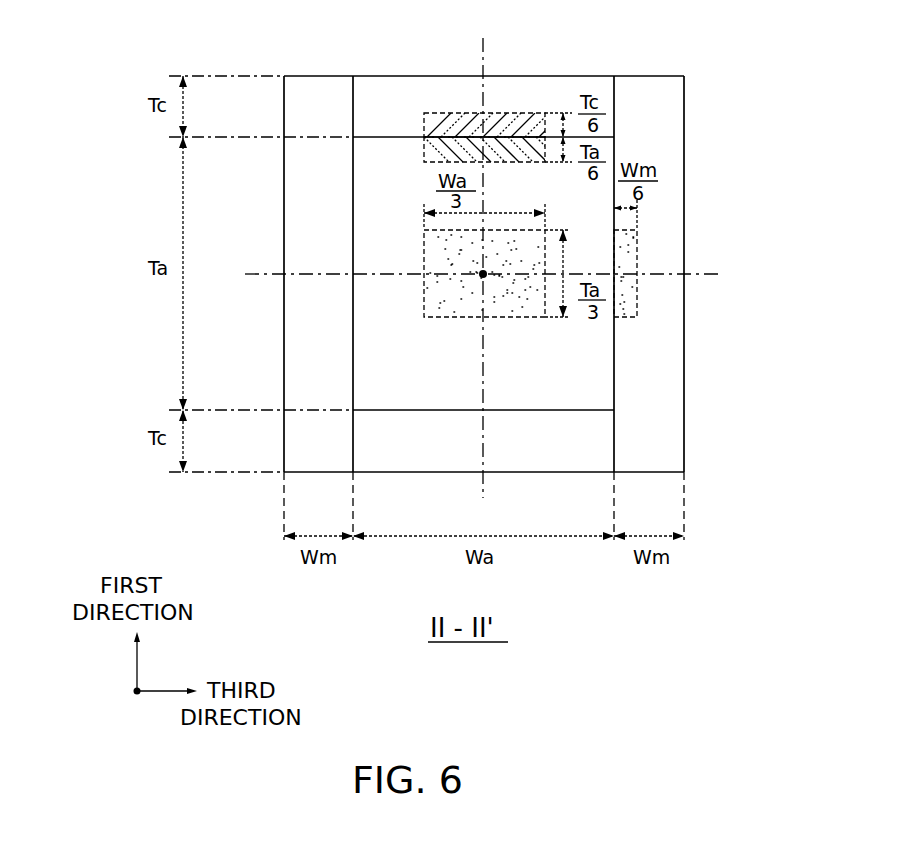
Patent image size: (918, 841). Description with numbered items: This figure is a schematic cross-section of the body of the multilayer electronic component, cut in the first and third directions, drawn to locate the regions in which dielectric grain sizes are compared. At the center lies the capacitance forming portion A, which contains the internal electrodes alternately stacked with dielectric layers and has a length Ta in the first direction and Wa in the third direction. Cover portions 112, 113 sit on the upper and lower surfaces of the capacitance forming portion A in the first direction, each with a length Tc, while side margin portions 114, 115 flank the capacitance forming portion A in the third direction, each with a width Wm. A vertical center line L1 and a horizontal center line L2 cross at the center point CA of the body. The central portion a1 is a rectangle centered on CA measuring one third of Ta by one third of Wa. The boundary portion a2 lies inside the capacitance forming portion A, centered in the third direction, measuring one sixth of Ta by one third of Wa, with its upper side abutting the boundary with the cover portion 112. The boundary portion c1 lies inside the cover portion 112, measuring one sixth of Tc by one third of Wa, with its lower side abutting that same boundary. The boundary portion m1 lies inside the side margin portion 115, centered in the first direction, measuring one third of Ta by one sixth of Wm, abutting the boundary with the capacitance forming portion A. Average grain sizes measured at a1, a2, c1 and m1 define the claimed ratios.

The cover portion 112 is at (541, 88).
The cover portion 113 is at (557, 450).
The side margin portion 114 is at (302, 168).
The side margin portion 115 is at (658, 121).
The capacitance forming portion A is at (590, 358).
The central portion of the capacitance forming portion a1 is at (424, 248).
The boundary portion between the capacitance forming portion and the cover portion i a2 is at (423, 152).
The boundary portion between the cover portion and the capacitance forming portion i c1 is at (423, 121).
The boundary portion between the side margin portion and the capacitance forming por m1 is at (637, 300).
The center point CA is at (496, 285).
The first center line L1 is at (481, 256).
The second center line L2 is at (495, 273).